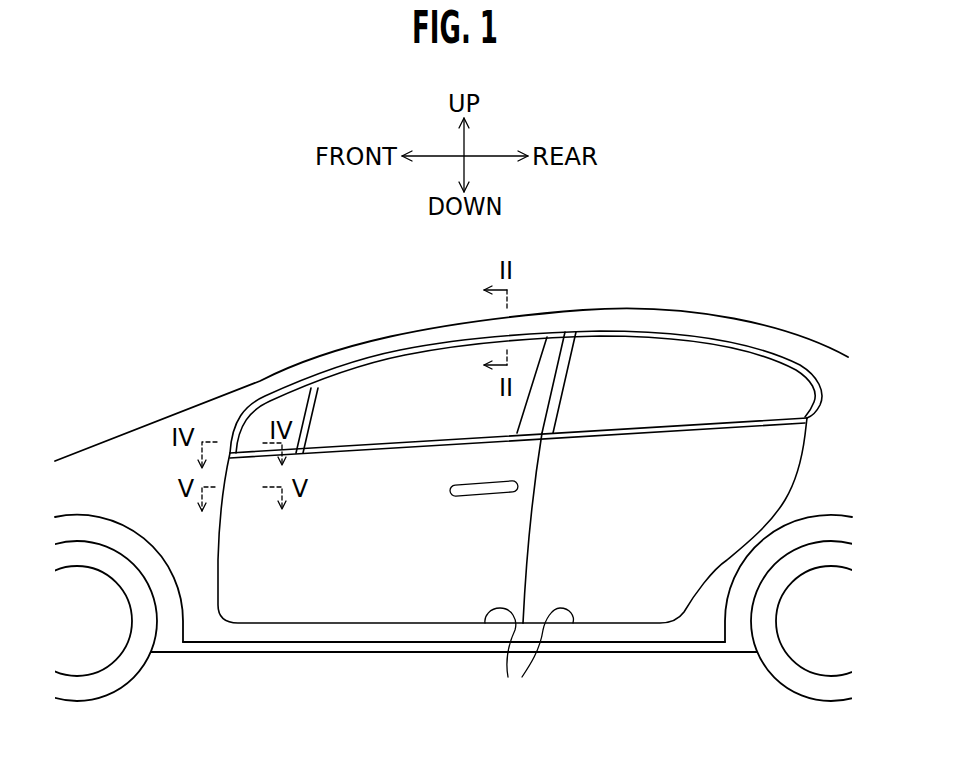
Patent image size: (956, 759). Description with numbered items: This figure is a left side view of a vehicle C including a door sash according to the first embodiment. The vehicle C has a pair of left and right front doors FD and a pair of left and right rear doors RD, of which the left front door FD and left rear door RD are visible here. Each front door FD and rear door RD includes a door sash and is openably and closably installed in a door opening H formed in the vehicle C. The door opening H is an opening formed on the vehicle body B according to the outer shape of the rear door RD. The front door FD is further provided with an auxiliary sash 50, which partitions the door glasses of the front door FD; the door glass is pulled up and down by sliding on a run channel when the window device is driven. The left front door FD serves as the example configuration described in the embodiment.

The vehicle C is at (213, 302).
The vehicle body B is at (112, 463).
The auxiliary sash 50 is at (310, 406).
The front door FD is at (358, 560).
The rear door RD is at (683, 565).
The door opening H is at (529, 657).